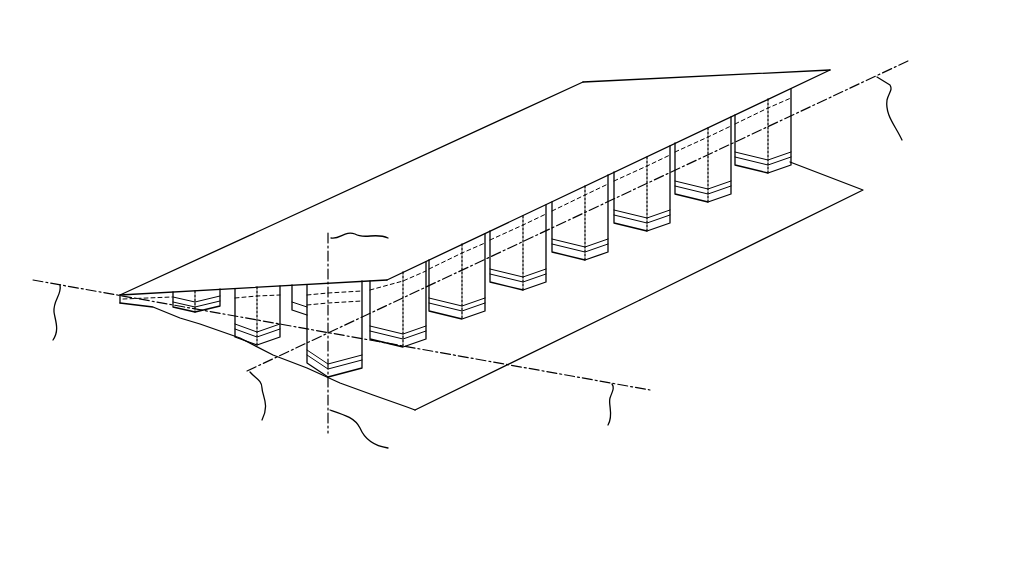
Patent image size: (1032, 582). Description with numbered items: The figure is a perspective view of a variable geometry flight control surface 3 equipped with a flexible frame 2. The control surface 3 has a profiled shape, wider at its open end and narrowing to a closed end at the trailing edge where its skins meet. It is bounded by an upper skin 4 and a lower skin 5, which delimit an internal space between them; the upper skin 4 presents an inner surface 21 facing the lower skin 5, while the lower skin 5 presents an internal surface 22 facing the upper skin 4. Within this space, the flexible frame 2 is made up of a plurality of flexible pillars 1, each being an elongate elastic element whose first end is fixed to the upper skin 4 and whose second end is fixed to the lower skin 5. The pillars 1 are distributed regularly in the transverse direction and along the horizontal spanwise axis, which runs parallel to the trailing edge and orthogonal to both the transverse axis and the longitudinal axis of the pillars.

The flexible pillar 1 is at (177, 336).
The flexible frame 2 is at (280, 497).
The variable geometry flight control surface 3 is at (358, 103).
The upper skin 4 is at (678, 106).
The lower skin 5 is at (720, 260).
The inner surface 21 is at (820, 95).
The internal surface 22 is at (802, 204).